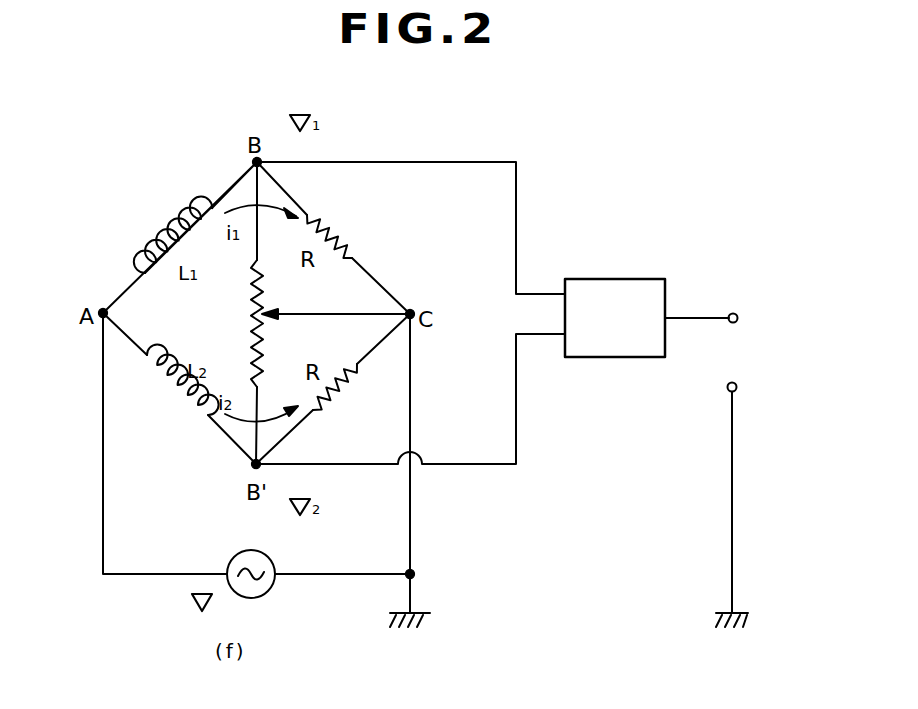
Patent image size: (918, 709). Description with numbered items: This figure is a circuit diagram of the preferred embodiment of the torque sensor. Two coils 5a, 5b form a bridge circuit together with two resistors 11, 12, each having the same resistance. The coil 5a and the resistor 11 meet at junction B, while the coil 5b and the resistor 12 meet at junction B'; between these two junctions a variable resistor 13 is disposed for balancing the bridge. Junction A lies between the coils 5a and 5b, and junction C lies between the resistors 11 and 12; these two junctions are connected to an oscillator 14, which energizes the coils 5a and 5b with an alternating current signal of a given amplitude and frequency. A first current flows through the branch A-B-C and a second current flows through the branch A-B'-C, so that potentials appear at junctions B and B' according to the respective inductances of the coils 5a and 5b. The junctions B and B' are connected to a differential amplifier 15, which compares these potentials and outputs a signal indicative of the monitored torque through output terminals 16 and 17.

The coil 5a is at (170, 234).
The coil 5b is at (182, 402).
The resistor 11 is at (336, 230).
The resistor 12 is at (331, 398).
The variable resistor 13 is at (247, 319).
The oscillator 14 is at (268, 591).
The differential amplifier 15 is at (615, 278).
The output terminal 16 is at (734, 313).
The output terminal 17 is at (739, 386).